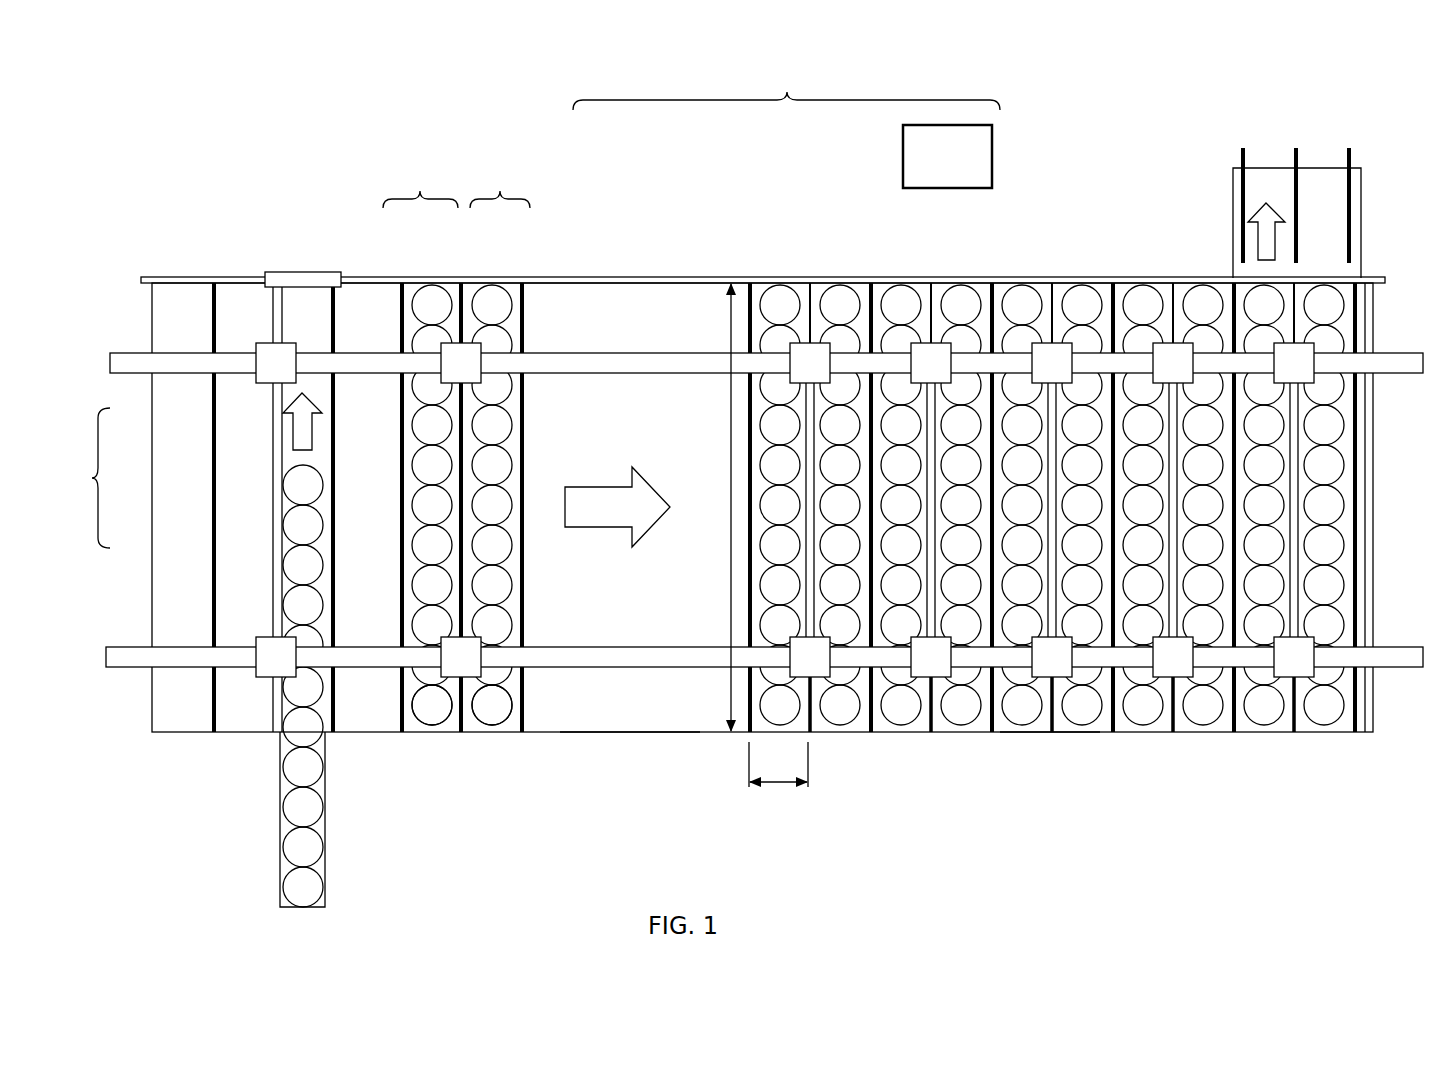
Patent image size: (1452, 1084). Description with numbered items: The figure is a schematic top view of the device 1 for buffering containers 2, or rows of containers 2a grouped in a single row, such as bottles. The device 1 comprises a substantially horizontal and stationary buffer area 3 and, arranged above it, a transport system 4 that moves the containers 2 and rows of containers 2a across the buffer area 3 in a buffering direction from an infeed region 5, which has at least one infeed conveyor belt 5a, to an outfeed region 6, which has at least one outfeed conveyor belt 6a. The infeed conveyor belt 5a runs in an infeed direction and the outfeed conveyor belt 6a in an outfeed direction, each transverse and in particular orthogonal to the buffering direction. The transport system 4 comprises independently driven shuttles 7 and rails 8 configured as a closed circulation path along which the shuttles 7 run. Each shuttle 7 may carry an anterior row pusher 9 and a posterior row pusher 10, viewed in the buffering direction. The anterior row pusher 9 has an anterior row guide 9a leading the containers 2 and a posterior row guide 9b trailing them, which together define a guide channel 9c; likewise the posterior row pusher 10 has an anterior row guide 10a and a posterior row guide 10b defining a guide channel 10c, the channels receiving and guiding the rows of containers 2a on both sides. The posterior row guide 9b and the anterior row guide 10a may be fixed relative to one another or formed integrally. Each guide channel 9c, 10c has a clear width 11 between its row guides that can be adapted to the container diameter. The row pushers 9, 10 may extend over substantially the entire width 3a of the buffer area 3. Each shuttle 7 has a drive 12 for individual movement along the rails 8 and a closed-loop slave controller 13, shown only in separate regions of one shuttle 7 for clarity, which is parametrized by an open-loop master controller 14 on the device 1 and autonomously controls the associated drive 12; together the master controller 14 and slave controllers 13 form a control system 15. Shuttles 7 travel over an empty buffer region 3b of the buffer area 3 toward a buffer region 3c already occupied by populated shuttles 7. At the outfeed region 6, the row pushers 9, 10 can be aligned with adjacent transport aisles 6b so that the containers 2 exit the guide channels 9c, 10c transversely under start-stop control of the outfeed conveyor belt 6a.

The device 1 is at (775, 190).
The containers 2 is at (1335, 583).
The rows of containers 2a is at (427, 724).
The buffer area 3 is at (626, 292).
The entire width of buffer area 3a is at (730, 593).
The empty buffer region 3b is at (628, 746).
The buffer region occupied by shuttles 3c is at (1046, 746).
The transport system 4 is at (92, 478).
The infeed region 5 is at (282, 263).
The infeed conveyor belt 5a is at (282, 858).
The outfeed region 6 is at (1380, 455).
The outfeed conveyor belt 6a is at (1362, 270).
The transport aisles 6b is at (1263, 196).
The shuttles 7 is at (208, 481).
The rails 8 is at (126, 373).
The anterior row pusher 9 is at (500, 185).
The anterior row guide of row pusher 9 9a is at (518, 287).
The posterior row guide of row pusher 9 9b is at (467, 286).
The guide channel of row pusher 9 9c is at (231, 316).
The posterior row pusher 10 is at (420, 185).
The anterior row guide of row pusher 10 10a is at (455, 286).
The posterior row guide of row pusher 10 10b is at (407, 287).
The guide channel of row pusher 10 10c is at (300, 333).
The clear width 11 is at (779, 784).
The drive 12 is at (473, 655).
The closed-loop slave controller 13 is at (463, 352).
The open-loop master controller 14 is at (905, 143).
The control system 15 is at (786, 87).